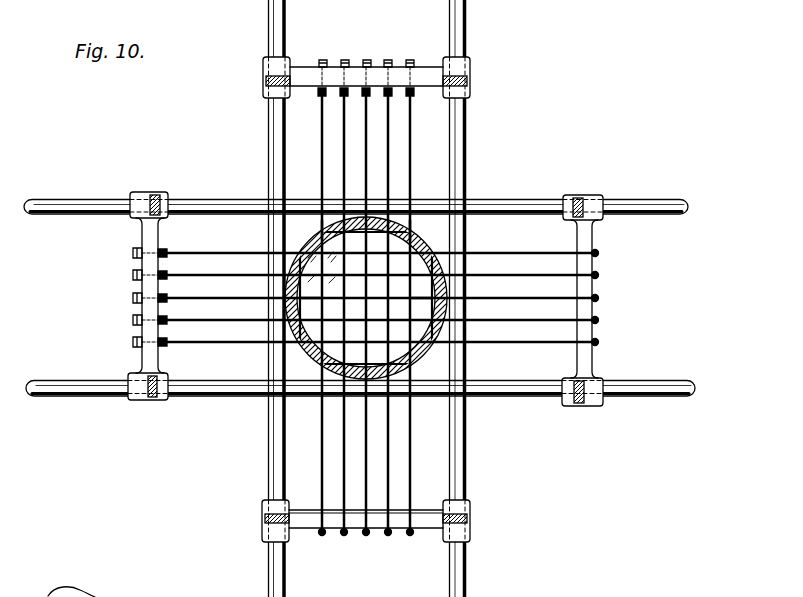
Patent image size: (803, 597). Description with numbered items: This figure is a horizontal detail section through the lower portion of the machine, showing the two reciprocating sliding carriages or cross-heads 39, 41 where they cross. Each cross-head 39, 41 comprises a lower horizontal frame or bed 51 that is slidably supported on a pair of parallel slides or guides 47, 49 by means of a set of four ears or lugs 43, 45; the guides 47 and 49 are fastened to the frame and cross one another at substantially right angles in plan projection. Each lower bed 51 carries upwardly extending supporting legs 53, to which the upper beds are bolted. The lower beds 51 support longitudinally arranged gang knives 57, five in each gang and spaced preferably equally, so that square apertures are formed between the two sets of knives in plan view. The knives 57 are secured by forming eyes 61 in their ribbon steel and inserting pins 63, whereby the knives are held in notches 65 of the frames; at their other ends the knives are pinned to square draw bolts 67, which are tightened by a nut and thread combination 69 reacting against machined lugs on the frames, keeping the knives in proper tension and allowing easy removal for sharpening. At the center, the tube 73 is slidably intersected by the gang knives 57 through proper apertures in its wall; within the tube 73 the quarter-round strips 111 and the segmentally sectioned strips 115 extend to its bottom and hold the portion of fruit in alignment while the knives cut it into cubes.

The cross-head 39 is at (359, 298).
The cross-head 41 is at (438, 287).
The ears 43 is at (147, 193).
The ears 45 is at (271, 69).
The guides 47 is at (661, 215).
The guides 49 is at (272, 583).
The lower horizontal bed 51 is at (272, 423).
The supporting legs 53 is at (266, 86).
The gang knives 57 is at (345, 156).
The eyes 61 is at (599, 298).
The pins 63 is at (599, 255).
The notches 65 is at (598, 343).
The draw bolts 67 is at (413, 98).
The nut and thread combination 69 is at (413, 60).
The tube 73 is at (441, 367).
The quarter-round strips 111 is at (310, 230).
The segmentally sectioned strips 115 is at (405, 213).